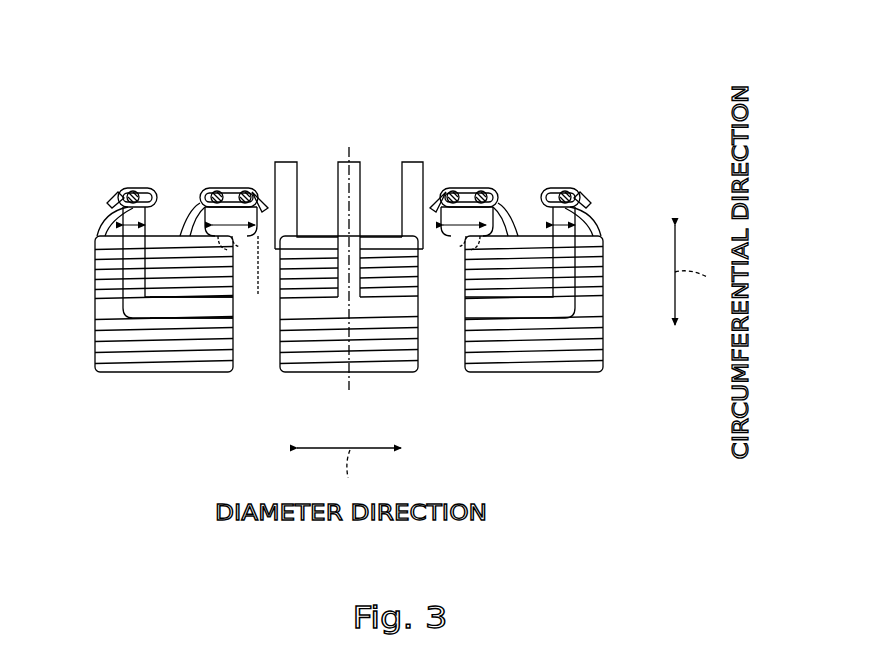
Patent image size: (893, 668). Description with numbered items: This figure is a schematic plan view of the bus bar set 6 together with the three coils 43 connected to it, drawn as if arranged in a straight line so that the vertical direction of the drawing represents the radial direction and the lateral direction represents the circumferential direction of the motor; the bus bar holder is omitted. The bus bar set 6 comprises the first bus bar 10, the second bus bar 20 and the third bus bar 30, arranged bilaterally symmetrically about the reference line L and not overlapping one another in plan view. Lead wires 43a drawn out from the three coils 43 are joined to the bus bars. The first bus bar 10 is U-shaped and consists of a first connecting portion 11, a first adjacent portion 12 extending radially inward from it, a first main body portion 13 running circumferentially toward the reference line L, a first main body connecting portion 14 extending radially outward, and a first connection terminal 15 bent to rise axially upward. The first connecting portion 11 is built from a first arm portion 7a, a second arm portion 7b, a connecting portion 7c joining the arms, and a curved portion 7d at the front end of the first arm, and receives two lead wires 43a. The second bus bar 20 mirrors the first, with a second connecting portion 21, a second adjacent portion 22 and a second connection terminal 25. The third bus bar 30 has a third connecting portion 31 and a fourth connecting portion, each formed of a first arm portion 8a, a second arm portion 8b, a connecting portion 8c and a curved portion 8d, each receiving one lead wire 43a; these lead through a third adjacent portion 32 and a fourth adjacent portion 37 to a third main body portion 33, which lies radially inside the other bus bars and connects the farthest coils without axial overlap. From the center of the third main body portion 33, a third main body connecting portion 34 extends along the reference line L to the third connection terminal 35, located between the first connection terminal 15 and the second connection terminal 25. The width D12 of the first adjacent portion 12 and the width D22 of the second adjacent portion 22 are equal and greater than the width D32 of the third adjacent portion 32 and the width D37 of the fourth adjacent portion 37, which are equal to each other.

The bus bar set 6 is at (397, 61).
The first bus bar 10 is at (302, 170).
The third bus bar 30 is at (366, 170).
The second bus bar 20 is at (396, 172).
The first connection terminal 15 is at (282, 160).
The third connection terminal 35 is at (347, 160).
The second connection terminal 25 is at (410, 160).
The first main body connecting portion 14 is at (292, 210).
The third main body connecting portion 34 is at (357, 210).
The first connecting portion 11 is at (212, 185).
The second connecting portion 21 is at (486, 185).
The first arm portion 7a is at (226, 196).
The second arm portion 7b is at (205, 215).
The connecting portion 7c is at (201, 205).
The curved portion 7d is at (259, 198).
The first adjacent portion 12 is at (230, 245).
The second adjacent portion 22 is at (468, 245).
The first main body portion 13 is at (258, 294).
The width of first adjacent portion D12 is at (254, 232).
The width of second adjacent portion D22 is at (444, 232).
The third connecting portion 31 is at (121, 184).
The first arm portion 8a is at (131, 189).
The second arm portion 8b is at (108, 218).
The connecting portion 8c is at (150, 202).
The curved portion 8d is at (112, 198).
The third adjacent portion 32 is at (135, 262).
The third main body portion 33 is at (207, 312).
The fourth adjacent portion 37 is at (563, 262).
The width of third adjacent portion D32 is at (124, 228).
The width of fourth adjacent portion D37 is at (573, 228).
The coil 43 is at (122, 366).
The lead wire 43a is at (138, 194).
The reference line L is at (355, 382).